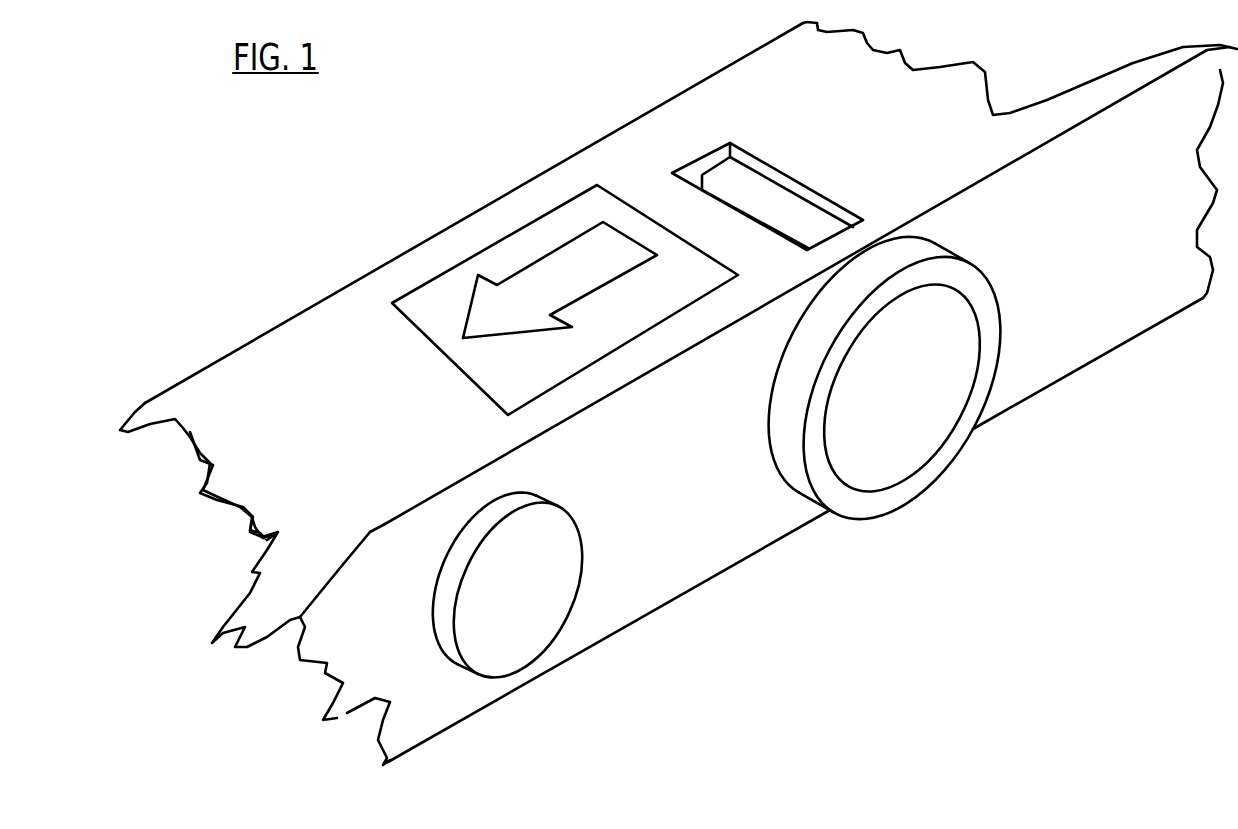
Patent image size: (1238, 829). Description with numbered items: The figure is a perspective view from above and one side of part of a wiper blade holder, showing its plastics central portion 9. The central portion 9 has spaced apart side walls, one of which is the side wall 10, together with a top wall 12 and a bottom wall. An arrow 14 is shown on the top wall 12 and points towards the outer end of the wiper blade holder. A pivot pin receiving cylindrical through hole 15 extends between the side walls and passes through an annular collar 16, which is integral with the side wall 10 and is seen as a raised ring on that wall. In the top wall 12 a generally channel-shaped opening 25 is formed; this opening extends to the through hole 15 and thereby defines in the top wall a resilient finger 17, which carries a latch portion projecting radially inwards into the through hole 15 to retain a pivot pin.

The plastics central portion 9 is at (323, 323).
The side wall 10 is at (708, 558).
The top wall 12 is at (628, 143).
The arrow 14 is at (550, 277).
The pivot pin receiving cylindrical through hole 15 is at (957, 370).
The annular collar 16 is at (875, 503).
The resilient finger 17 is at (763, 193).
The channel-shaped opening 25 is at (693, 174).